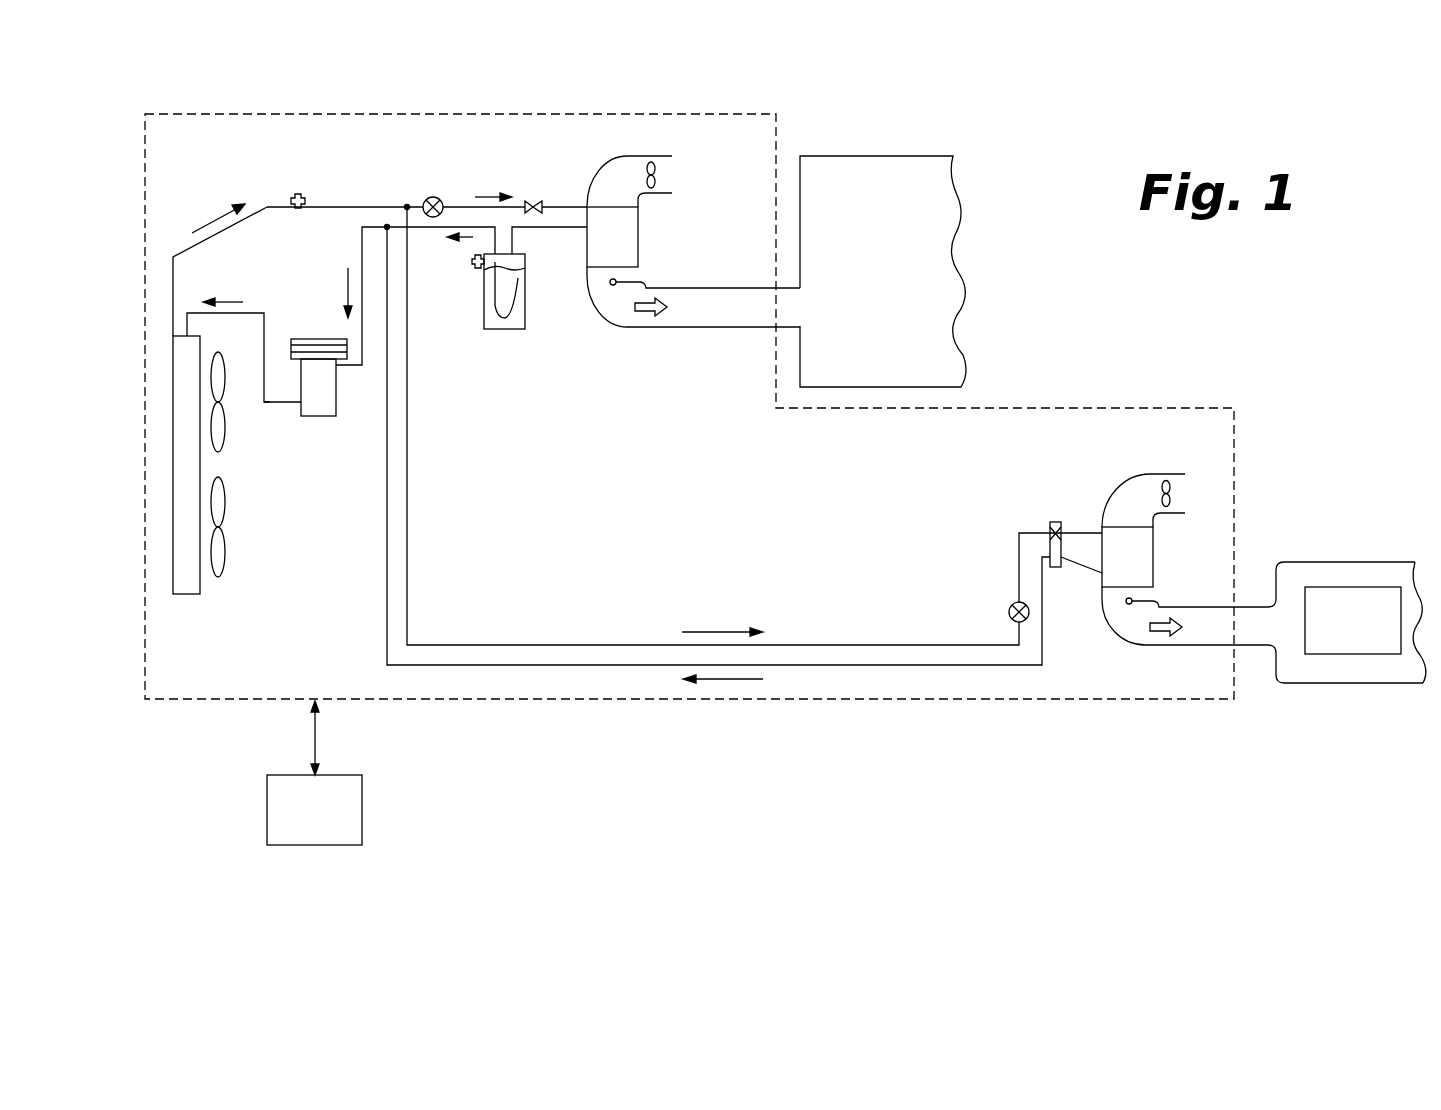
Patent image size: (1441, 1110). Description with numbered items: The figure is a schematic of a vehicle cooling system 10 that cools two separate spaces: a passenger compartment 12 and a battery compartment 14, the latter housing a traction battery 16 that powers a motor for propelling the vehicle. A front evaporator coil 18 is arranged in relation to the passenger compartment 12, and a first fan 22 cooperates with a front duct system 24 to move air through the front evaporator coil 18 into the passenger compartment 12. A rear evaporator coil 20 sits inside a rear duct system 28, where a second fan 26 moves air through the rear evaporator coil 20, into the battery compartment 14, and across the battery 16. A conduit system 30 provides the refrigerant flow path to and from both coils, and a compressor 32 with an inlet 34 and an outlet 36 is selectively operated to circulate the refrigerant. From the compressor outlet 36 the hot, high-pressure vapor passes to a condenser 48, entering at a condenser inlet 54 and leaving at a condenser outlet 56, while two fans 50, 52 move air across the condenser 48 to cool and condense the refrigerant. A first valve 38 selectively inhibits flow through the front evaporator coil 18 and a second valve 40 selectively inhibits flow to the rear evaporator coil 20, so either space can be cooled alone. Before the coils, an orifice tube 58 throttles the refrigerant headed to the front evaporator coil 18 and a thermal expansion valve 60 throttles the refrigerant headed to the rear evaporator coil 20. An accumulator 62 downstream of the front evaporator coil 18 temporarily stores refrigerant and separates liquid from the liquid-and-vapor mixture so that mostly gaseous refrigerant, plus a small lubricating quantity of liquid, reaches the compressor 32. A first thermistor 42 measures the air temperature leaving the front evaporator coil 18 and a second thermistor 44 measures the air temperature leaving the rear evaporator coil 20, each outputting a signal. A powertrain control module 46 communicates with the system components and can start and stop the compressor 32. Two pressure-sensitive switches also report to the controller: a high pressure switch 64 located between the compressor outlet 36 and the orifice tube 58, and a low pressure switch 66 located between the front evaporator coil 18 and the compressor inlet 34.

The cooling system 10 is at (1112, 400).
The passenger compartment 12 is at (880, 156).
The battery compartment 14 is at (1318, 562).
The traction battery 16 is at (1338, 655).
The front evaporator coil 18 is at (639, 228).
The rear evaporator coil 20 is at (1153, 556).
The first fan 22 is at (656, 166).
The front duct system 24 is at (623, 156).
The second fan 26 is at (1170, 485).
The rear duct system 28 is at (1145, 647).
The conduit system 30 is at (468, 676).
The compressor 32 is at (318, 417).
The compressor inlet 34 is at (336, 365).
The compressor outlet 36 is at (301, 402).
The first valve 38 is at (427, 201).
The second valve 40 is at (1009, 612).
The first thermistor 42 is at (613, 286).
The second thermistor 44 is at (1129, 605).
The powertrain control module 46 is at (362, 812).
The condenser 48 is at (173, 530).
The condenser fan 50 is at (228, 560).
The condenser fan 52 is at (225, 435).
The condenser inlet 54 is at (187, 337).
The condenser outlet 56 is at (173, 337).
The orifice tube 58 is at (537, 203).
The thermal expansion valve 60 is at (1058, 522).
The accumulator 62 is at (513, 330).
The first switch 64 is at (290, 199).
The second switch 66 is at (472, 262).